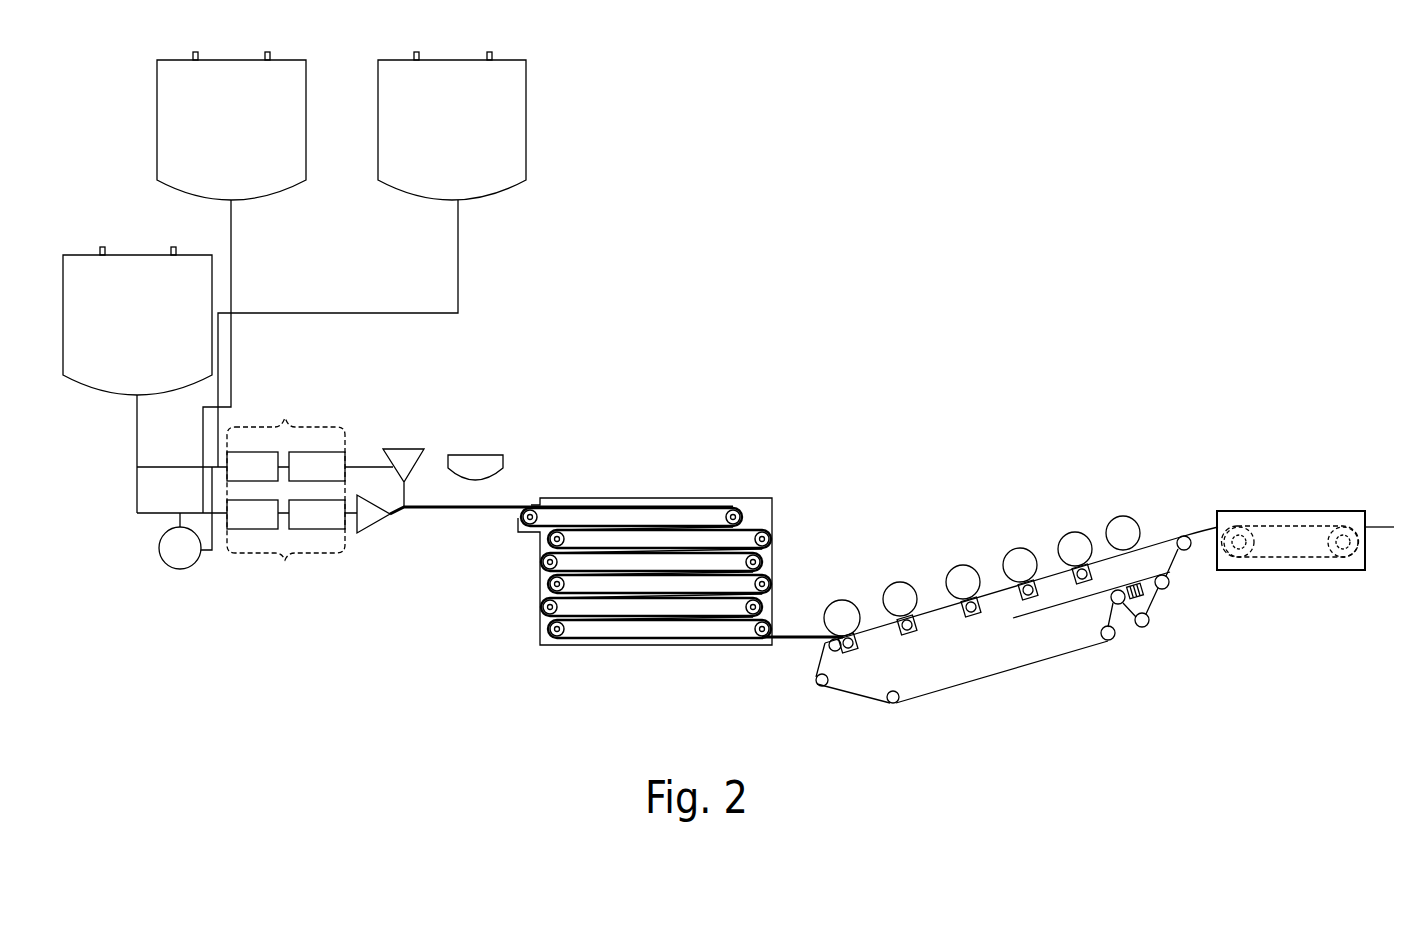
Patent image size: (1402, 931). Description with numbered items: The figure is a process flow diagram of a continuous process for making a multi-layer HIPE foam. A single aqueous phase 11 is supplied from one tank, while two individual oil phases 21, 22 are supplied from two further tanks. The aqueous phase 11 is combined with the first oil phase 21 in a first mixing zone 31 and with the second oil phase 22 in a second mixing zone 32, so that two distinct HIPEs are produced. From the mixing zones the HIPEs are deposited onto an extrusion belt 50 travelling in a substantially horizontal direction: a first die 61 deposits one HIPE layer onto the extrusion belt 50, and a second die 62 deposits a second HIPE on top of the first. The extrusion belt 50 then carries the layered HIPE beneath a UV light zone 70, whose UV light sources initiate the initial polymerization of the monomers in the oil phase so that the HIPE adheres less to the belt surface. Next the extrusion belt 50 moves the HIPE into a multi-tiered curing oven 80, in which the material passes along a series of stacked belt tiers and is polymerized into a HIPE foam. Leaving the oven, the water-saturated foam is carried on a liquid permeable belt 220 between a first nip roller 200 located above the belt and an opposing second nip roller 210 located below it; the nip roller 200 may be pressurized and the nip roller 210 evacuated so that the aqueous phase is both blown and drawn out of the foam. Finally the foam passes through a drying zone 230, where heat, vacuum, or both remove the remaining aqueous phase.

The aqueous phase 11 is at (142, 255).
The oil phase 21 is at (157, 157).
The oil phase 22 is at (378, 158).
The mixing zone 31 is at (285, 418).
The mixing zone 32 is at (285, 560).
The extrusion belt 50 is at (478, 510).
The first die 61 is at (374, 524).
The second die 62 is at (401, 449).
The UV light zone 70 is at (462, 455).
The multi-tiered curing oven 80 is at (636, 498).
The nip roller 200 is at (836, 601).
The second nip roller 210 is at (850, 652).
The liquid permeable belt 220 is at (973, 683).
The drying zone 230 is at (1242, 511).